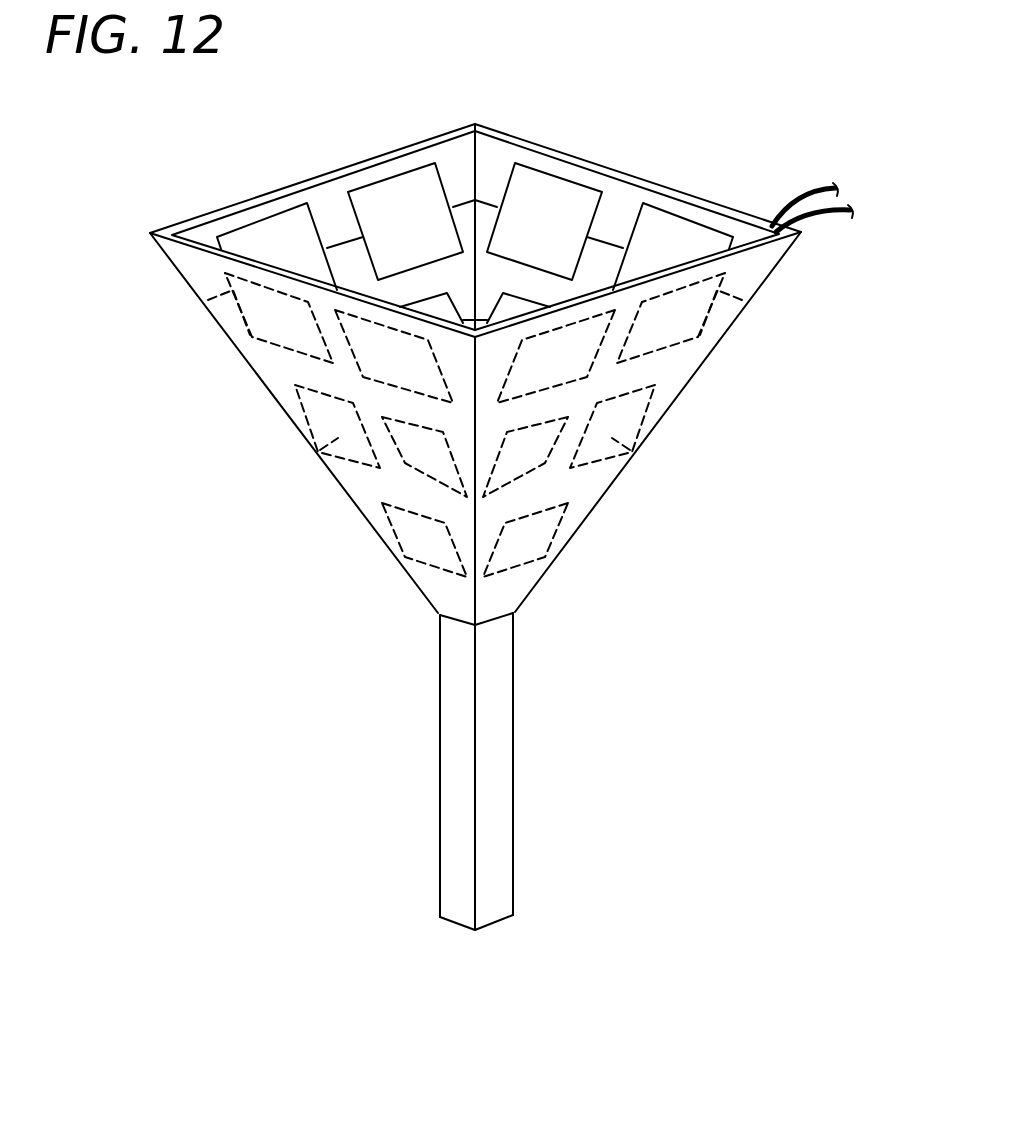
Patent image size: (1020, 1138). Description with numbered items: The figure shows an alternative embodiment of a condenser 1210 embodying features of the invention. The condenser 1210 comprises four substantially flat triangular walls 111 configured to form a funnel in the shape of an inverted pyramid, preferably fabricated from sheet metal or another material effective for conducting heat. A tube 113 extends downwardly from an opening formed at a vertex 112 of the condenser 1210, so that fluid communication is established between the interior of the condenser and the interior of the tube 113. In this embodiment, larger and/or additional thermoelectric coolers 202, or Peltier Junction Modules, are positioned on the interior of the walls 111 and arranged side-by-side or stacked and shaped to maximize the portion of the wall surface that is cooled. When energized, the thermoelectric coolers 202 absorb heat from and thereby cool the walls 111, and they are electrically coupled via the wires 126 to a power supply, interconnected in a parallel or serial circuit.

The condenser 1210 is at (140, 189).
The thermoelectric cooler 202 is at (387, 193).
The walls 111 is at (260, 368).
The wires 126 is at (812, 190).
The vertex 112 is at (463, 625).
The tube 113 is at (502, 702).